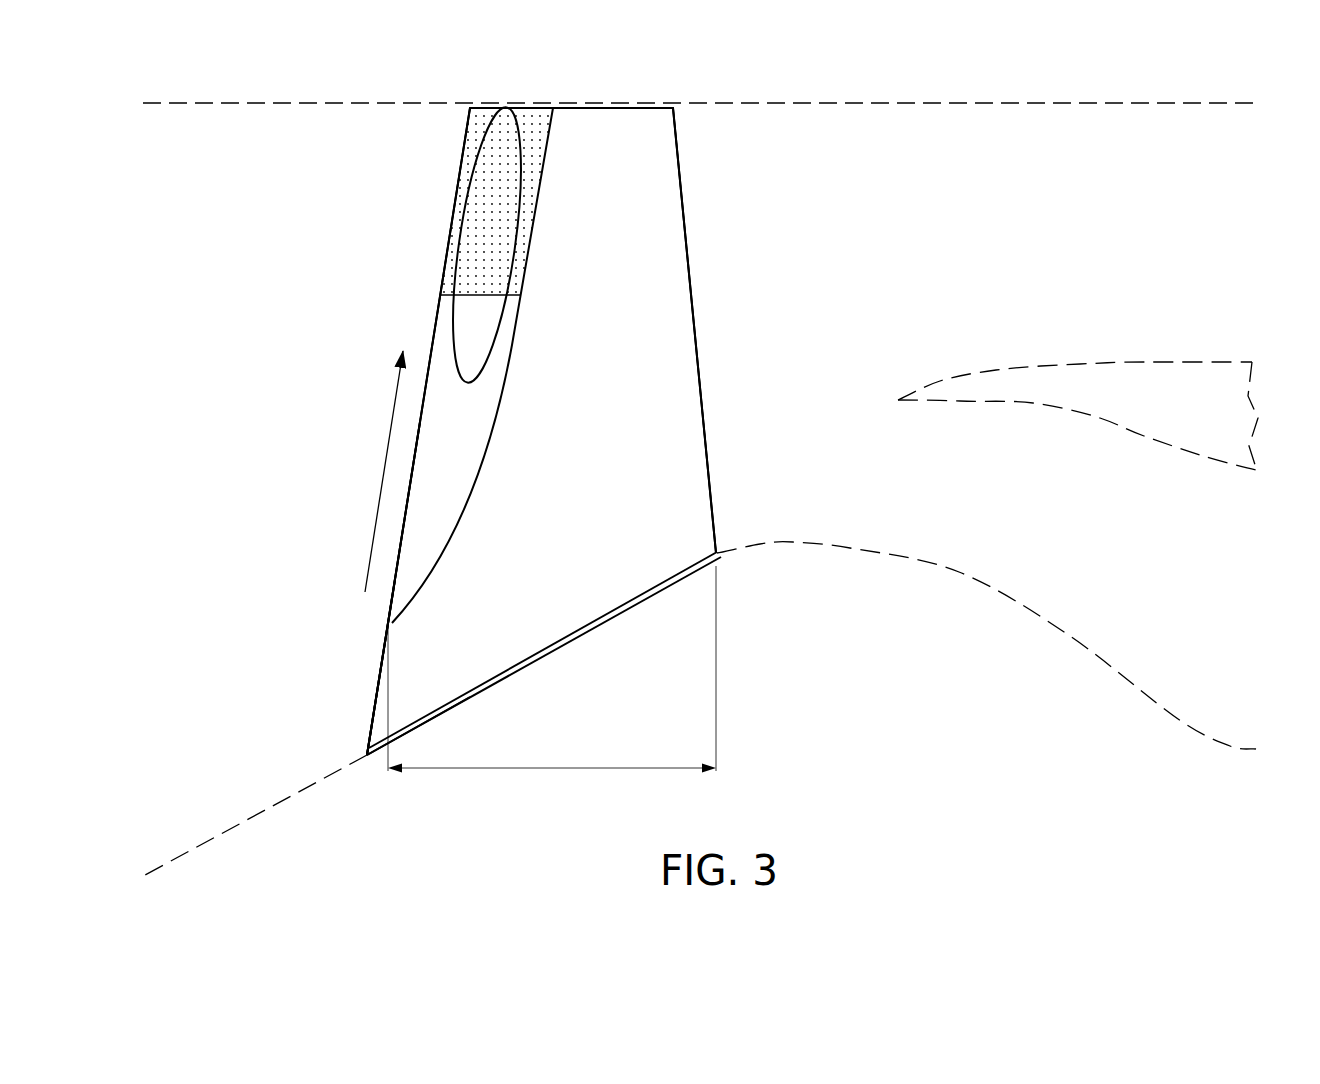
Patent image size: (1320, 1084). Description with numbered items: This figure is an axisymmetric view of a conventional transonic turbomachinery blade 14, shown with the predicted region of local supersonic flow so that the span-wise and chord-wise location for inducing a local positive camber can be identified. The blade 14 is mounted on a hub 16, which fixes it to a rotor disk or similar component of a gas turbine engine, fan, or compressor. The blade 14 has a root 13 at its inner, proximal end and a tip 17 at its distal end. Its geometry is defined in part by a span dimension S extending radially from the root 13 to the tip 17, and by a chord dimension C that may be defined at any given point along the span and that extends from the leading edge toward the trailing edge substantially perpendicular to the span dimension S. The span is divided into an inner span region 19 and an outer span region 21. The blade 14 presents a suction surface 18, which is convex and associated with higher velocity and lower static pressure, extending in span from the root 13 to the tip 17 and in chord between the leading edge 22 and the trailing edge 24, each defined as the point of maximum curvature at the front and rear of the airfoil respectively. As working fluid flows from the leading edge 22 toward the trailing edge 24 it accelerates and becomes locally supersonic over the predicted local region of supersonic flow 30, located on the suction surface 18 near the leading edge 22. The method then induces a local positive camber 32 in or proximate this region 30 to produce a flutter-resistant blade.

The transonic turbomachinery blade 14 is at (585, 431).
The tip 17 is at (580, 109).
The suction surface 18 is at (626, 334).
The trailing edge 24 is at (703, 375).
The outer span region 21 is at (416, 431).
The leading edge 22 is at (378, 680).
The local positive camber 32 is at (467, 201).
The predicted local region of supersonic flow 30 is at (491, 363).
The root 13 is at (575, 630).
The hub 16 is at (598, 628).
The inner span region 19 is at (362, 667).
The span dimension S is at (387, 453).
The chord dimension C is at (560, 769).